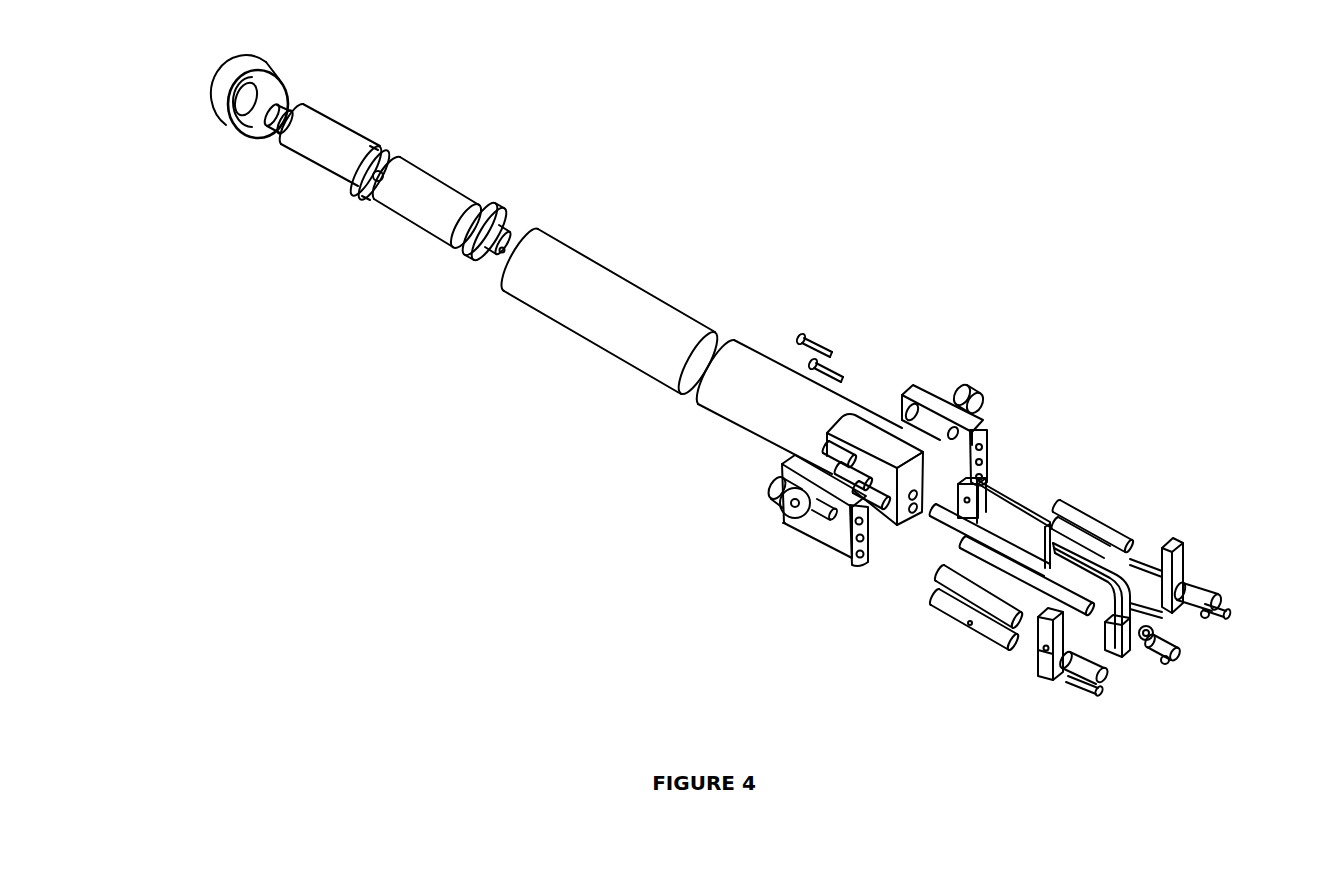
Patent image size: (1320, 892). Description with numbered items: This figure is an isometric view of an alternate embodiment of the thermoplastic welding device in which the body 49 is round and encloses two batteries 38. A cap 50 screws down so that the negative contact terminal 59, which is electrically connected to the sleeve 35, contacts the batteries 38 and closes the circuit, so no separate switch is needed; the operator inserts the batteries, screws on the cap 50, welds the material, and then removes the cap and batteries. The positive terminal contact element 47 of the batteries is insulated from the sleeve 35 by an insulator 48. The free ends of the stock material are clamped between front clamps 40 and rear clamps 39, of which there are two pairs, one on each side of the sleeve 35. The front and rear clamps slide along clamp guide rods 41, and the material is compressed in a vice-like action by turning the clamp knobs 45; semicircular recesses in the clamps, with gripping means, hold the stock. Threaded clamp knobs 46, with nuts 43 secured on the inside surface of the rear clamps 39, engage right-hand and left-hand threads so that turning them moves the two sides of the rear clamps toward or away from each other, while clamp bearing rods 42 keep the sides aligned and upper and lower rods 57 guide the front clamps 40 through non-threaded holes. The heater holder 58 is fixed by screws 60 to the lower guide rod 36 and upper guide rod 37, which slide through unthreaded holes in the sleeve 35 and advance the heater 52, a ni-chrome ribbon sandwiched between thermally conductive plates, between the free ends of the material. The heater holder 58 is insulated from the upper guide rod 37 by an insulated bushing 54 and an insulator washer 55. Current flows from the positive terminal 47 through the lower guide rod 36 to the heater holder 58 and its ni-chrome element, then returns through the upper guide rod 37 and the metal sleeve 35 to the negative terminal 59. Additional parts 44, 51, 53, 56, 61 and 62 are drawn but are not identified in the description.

The sleeve 35 is at (783, 363).
The lower guide rod 36 is at (962, 550).
The upper guide rod 37 is at (935, 518).
The batteries 38 is at (310, 172).
The rear clamps 39 is at (803, 539).
The front clamps 40 is at (1035, 678).
The clamp guide rods 41 is at (935, 617).
The clamp bearing rods 42 is at (826, 519).
The nuts 43 is at (933, 420).
The nut 44 is at (1100, 703).
The clamp knobs 45 is at (1072, 683).
The threaded clamp knobs 46 is at (965, 390).
The positive terminal contact element 47 is at (501, 234).
The insulator 48 is at (476, 265).
The body 49 is at (652, 290).
The cap 50 is at (222, 124).
The nut 51 is at (1138, 640).
The heater 52 is at (1012, 502).
The screw 53 is at (833, 347).
The insulated bushing 54 is at (1152, 588).
The insulator washer 55 is at (1180, 568).
The screw 56 is at (843, 373).
The upper and lower rods 57 is at (1050, 676).
The heater holder 58 is at (1138, 612).
The negative contact terminal 59 is at (278, 131).
The screws 60 is at (1166, 668).
The strap 61 is at (1058, 560).
The bracket 62 is at (975, 488).